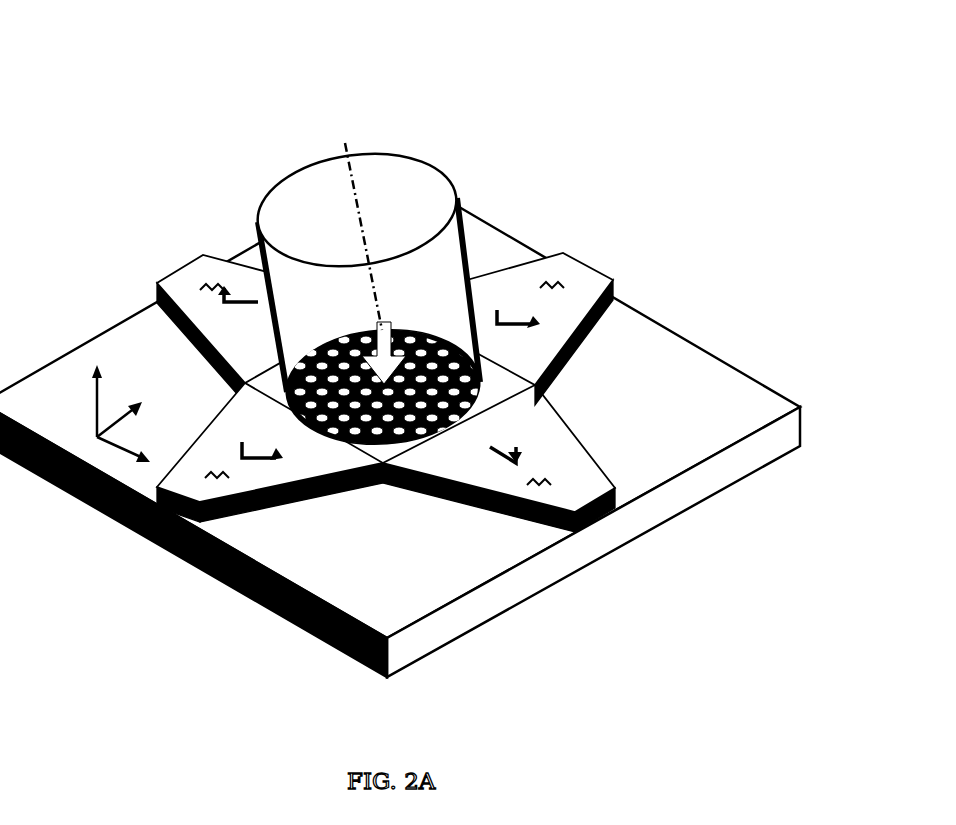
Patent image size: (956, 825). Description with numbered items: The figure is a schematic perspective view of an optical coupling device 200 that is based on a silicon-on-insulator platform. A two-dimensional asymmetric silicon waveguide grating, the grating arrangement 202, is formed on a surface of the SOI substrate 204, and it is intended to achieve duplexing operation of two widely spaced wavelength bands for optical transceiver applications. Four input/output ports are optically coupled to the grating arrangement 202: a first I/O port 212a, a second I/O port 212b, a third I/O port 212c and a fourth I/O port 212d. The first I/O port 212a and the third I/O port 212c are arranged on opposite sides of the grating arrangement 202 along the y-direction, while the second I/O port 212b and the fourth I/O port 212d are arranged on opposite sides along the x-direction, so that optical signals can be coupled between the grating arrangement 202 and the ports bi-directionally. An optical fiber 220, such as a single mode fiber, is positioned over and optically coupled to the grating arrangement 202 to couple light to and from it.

The optical coupling device 200 is at (125, 86).
The grating arrangement 202 is at (497, 409).
The SOI substrate 204 is at (353, 580).
The first I/O port 212a is at (196, 268).
The second I/O port 212b is at (233, 435).
The third I/O port 212c is at (582, 476).
The fourth I/O port 212d is at (573, 268).
The optical fiber 220 is at (302, 178).